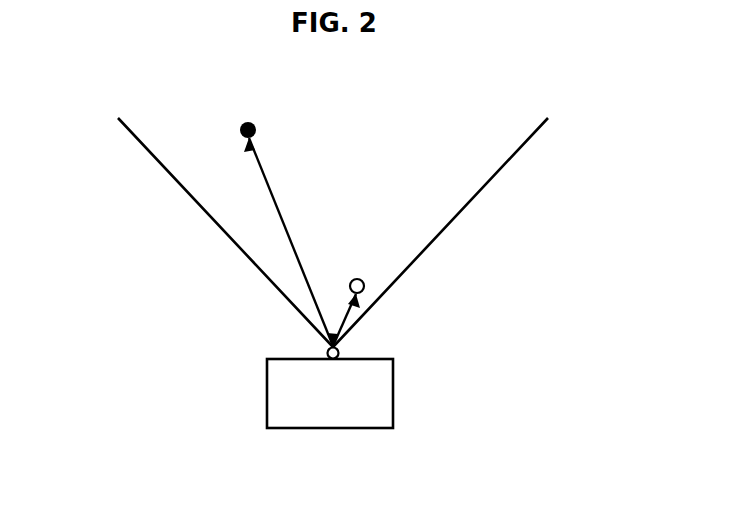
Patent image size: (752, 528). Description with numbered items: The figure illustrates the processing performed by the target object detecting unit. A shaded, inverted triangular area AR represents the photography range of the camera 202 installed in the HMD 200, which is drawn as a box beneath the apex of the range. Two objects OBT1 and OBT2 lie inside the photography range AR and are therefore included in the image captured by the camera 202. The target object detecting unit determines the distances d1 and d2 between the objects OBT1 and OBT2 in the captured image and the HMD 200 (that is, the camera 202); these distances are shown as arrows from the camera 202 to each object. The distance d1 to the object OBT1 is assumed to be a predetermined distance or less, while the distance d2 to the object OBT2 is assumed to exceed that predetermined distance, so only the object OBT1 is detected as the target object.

The photography range AR is at (420, 189).
The HMD 200 is at (393, 393).
The camera 202 is at (327, 356).
The object OBT1 is at (364, 285).
The object OBT2 is at (240, 137).
The distance d1 is at (360, 322).
The distance d2 is at (291, 242).